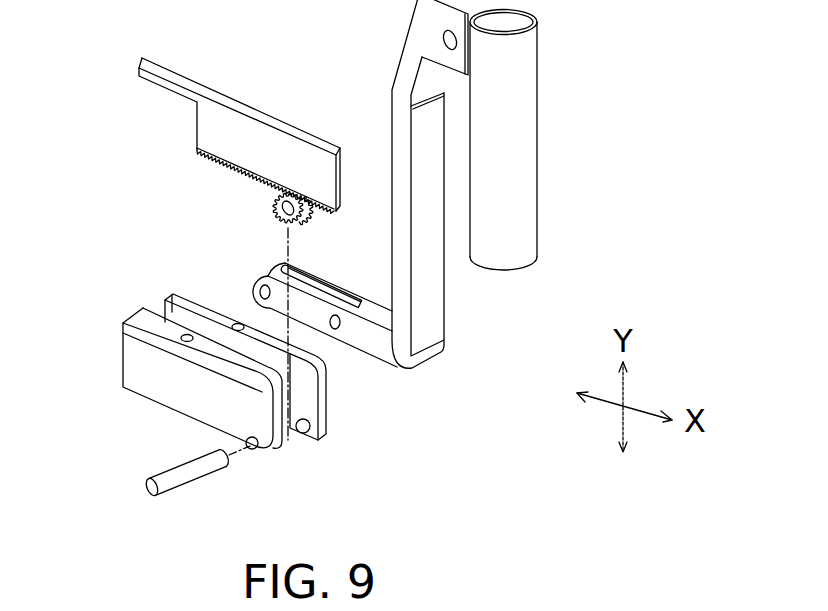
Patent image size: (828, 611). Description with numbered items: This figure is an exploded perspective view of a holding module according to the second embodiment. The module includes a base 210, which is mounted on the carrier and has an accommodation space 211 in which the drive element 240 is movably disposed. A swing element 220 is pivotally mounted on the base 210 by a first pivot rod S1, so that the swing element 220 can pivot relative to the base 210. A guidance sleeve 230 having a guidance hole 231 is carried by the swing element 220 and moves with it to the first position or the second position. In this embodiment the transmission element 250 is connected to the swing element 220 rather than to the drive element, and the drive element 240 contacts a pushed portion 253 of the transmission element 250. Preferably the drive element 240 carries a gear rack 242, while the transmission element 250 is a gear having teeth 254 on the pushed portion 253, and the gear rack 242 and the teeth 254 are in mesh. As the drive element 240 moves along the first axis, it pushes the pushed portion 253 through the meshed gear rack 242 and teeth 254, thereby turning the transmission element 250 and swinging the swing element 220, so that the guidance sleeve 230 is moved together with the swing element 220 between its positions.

The base 210 is at (158, 377).
The accommodation space 211 is at (182, 320).
The swing element 220 is at (420, 315).
The guidance sleeve 230 is at (515, 147).
The guidance hole 231 is at (508, 22).
The drive element 240 is at (233, 130).
The gear rack 242 is at (218, 157).
The transmission element 250 is at (276, 212).
The pushed portion 253 is at (284, 192).
The teeth 254 is at (305, 226).
The first pivot rod S1 is at (172, 473).